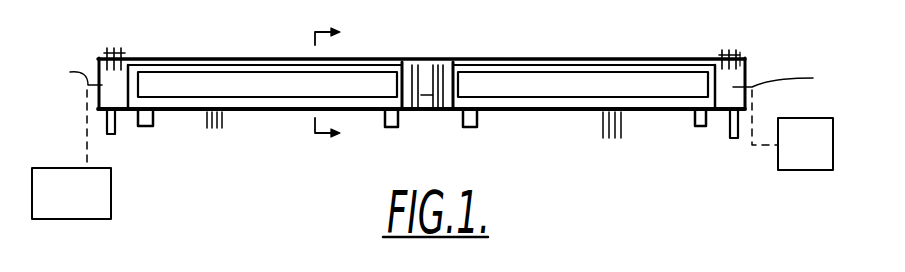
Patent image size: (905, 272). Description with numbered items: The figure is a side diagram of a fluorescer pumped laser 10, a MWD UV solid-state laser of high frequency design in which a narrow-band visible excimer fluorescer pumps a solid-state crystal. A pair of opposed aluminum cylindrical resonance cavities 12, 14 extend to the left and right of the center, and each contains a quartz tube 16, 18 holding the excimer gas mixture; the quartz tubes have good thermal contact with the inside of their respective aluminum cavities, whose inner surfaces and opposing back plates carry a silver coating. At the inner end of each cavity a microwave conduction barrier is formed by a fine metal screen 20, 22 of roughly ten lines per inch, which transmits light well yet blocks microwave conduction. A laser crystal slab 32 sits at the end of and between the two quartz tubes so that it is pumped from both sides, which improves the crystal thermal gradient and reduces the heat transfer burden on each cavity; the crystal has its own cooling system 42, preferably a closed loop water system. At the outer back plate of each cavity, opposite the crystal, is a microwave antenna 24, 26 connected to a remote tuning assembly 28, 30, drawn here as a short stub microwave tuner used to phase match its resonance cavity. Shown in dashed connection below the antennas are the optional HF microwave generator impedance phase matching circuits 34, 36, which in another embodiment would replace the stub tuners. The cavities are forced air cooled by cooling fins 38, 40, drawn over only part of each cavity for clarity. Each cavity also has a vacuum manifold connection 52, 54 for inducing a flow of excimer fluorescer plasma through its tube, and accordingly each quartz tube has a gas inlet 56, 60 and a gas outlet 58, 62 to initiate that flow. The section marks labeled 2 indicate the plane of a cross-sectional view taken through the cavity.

The fluorescer pumped laser 10 is at (613, 51).
The aluminum cylindrical resonance cavity 12 is at (243, 58).
The aluminum cylindrical resonance cavity 14 is at (672, 57).
The quartz tube 16 is at (357, 70).
The quartz tube 18 is at (558, 67).
The fine metal screen 20 is at (410, 95).
The fine metal screen 22 is at (449, 82).
The microwave antenna 24 is at (63, 114).
The microwave antenna 26 is at (797, 99).
The remote tuning assembly 28 is at (147, 44).
The remote tuning assembly 30 is at (750, 55).
The laser crystal slab 32 is at (428, 106).
The HF microwave generator impedance phase matching circuit 34 is at (84, 216).
The HF microwave generator impedance phase matching circuit 36 is at (802, 170).
The cooling fins 38 is at (226, 123).
The cooling fins 40 is at (603, 130).
The cooling system 42 is at (494, 179).
The vacuum manifold connection 52 is at (115, 129).
The vacuum manifold connection 54 is at (723, 138).
The gas inlet 56 is at (153, 115).
The gas outlet 58 is at (379, 128).
The gas inlet 60 is at (478, 115).
The gas outlet 62 is at (697, 122).
The section line 2- 2 is at (341, 84).